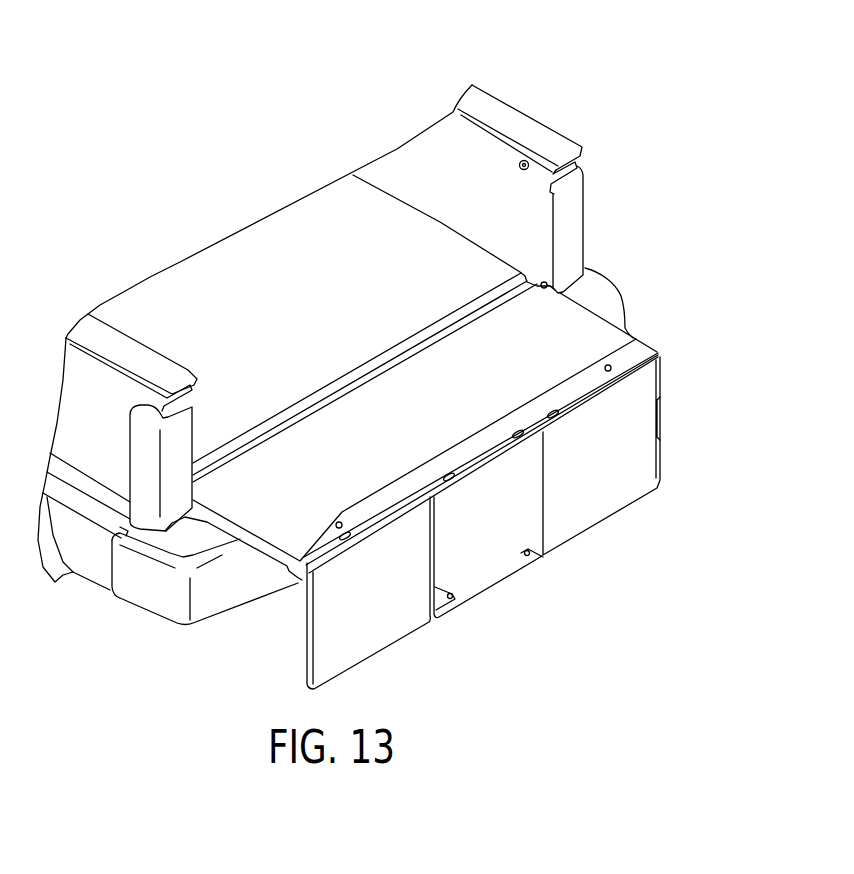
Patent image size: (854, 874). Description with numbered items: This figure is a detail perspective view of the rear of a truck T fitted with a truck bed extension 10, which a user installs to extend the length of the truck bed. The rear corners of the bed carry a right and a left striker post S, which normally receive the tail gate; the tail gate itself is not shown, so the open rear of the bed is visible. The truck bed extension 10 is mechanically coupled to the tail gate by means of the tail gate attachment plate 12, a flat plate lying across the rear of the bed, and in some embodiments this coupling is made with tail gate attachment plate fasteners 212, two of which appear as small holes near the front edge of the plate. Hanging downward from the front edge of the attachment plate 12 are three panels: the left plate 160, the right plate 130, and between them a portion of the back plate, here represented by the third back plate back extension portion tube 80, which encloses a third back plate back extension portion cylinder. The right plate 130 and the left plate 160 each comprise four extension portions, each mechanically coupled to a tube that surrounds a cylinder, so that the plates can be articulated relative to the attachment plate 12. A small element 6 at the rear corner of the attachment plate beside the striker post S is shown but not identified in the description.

The truck T is at (542, 87).
The striker post S is at (517, 165).
The side bracket 6 is at (593, 325).
The truck bed extension 10 is at (466, 497).
The tail gate attachment plate 12 is at (480, 442).
The tail gate attachment plate fasteners 212 is at (336, 523).
The third back plate back extension portion tube 80 is at (487, 560).
The right plate 130 is at (608, 498).
The left plate 160 is at (377, 635).